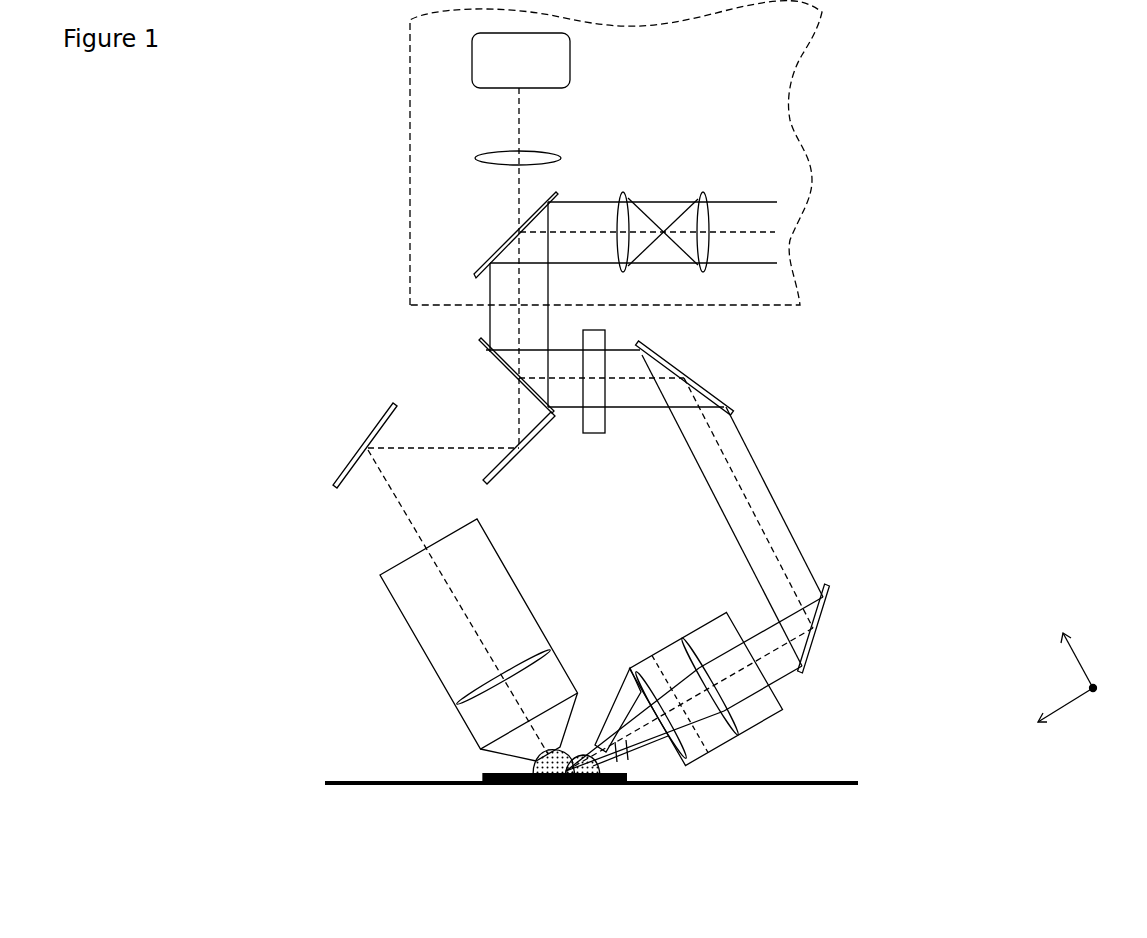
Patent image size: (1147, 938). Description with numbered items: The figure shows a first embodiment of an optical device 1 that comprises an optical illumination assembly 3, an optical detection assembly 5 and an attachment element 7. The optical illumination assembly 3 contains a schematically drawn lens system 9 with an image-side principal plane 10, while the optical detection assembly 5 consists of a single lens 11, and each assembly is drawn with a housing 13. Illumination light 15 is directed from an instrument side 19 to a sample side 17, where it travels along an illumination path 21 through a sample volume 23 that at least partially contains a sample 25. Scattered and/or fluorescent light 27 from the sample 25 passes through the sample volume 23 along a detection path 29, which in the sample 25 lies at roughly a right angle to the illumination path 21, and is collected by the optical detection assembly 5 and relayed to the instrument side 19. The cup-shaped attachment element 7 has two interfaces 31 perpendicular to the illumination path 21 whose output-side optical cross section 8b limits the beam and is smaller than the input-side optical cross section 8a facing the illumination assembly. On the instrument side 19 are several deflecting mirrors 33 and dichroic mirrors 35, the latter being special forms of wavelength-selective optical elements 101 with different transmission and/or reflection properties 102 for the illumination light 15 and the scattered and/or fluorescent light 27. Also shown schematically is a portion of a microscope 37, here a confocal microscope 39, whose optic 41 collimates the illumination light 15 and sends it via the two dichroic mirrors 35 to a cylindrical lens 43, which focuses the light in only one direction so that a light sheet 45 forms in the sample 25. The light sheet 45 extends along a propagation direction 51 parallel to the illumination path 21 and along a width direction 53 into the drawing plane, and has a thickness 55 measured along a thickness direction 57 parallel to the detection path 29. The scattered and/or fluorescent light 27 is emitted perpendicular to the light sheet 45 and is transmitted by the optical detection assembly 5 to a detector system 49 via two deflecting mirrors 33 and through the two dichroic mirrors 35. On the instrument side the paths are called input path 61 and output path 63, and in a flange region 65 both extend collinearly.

The optical device 1 is at (283, 542).
The optical illumination assembly 3 is at (757, 722).
The optical detection assembly 5 is at (444, 669).
The attachment element 7 is at (640, 778).
The input-side optical cross section 8a is at (650, 783).
The output-side optical cross section 8b is at (598, 735).
The lens system 9 is at (648, 638).
The image-side principal plane 10 is at (735, 781).
The single lens 11 is at (463, 700).
The housing 13 is at (413, 554).
The illumination light 15 is at (618, 472).
The sample side 17 is at (490, 767).
The instrument side 19 is at (925, 525).
The illumination path 21 is at (612, 785).
The sample volume 23 is at (532, 785).
The sample 25 is at (485, 785).
The scattered and/or fluorescent light 27 is at (430, 520).
The detection path 29 is at (542, 757).
The interfaces 31 is at (606, 741).
The deflecting mirrors 33 is at (353, 455).
The dichroic mirrors 35 is at (430, 520).
The microscope 37 is at (684, 153).
The confocal microscope 39 is at (800, 140).
The optic 41 is at (707, 190).
The cylindrical lens 43 is at (605, 338).
The light sheet 45 is at (603, 816).
The detector system 49 is at (466, 32).
The propagation direction 51 is at (1060, 708).
The width direction 53 is at (1093, 688).
The thickness 55 is at (580, 785).
The thickness direction 57 is at (1077, 657).
The input path 61 is at (753, 503).
The output path 63 is at (475, 450).
The flange region 65 is at (452, 323).
The wavelength-selective optical elements 101 is at (430, 520).
The transmission and/or reflection properties 102 is at (518, 201).